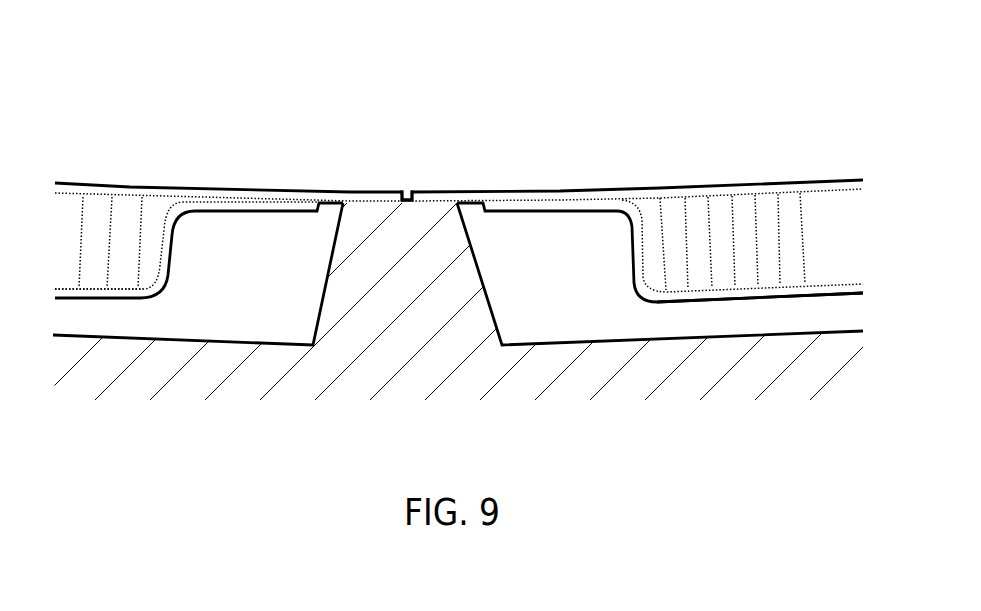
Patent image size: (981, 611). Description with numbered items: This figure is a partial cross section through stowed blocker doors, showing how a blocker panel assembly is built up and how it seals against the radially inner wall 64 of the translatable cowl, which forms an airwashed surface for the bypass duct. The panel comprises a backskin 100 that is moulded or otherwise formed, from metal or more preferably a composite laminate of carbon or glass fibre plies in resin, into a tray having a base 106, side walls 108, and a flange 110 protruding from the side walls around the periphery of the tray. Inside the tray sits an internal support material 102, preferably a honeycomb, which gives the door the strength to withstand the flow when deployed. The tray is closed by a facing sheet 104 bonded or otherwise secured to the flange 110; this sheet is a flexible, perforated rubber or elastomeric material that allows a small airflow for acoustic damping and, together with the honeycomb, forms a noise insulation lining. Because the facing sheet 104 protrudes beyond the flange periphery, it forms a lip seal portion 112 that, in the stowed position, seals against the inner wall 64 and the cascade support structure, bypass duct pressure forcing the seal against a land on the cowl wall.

The radially inner wall 64 is at (377, 306).
The backskin 100 is at (693, 293).
The internal support material 102 is at (790, 273).
The facing sheet 104 is at (648, 193).
The base 106 is at (645, 298).
The side walls 108 is at (630, 247).
The flange 110 is at (515, 208).
The lip seal portion 112 is at (420, 192).